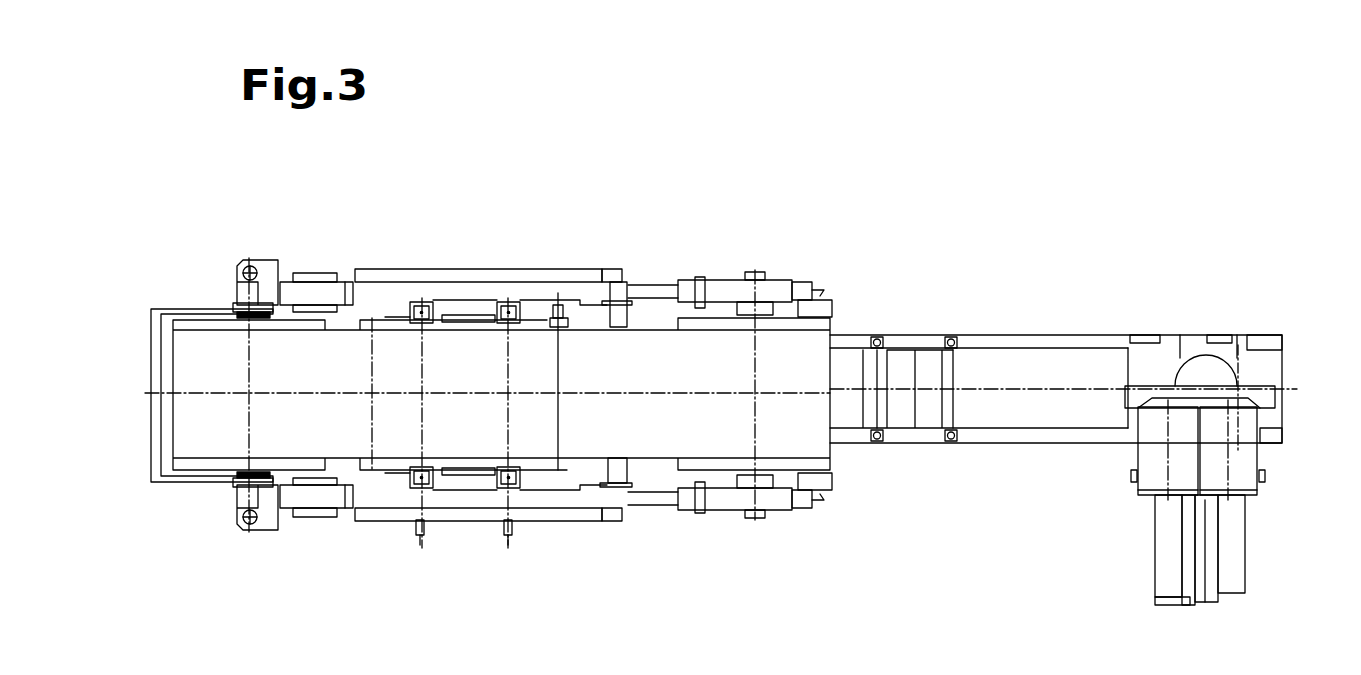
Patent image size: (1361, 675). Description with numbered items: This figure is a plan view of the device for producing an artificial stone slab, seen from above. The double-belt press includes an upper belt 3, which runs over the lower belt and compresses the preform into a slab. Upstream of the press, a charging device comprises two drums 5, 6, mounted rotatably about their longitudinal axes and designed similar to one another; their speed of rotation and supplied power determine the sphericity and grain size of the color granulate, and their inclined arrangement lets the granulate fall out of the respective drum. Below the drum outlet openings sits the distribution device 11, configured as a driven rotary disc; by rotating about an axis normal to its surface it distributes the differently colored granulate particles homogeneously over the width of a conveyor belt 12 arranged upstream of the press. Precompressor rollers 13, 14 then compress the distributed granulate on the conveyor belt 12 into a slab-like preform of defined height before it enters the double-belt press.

The upper belt 3 is at (653, 362).
The drum 5 is at (1153, 473).
The drum 6 is at (1252, 468).
The distribution device 11 is at (1213, 372).
The conveyor belt 12 is at (985, 353).
The precompressor roller 13 is at (882, 335).
The precompressor roller 14 is at (958, 335).